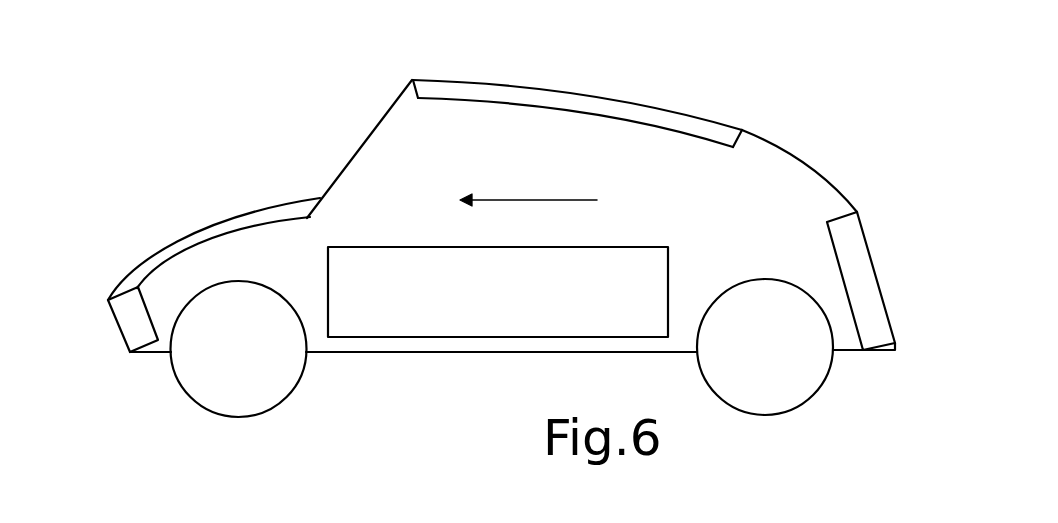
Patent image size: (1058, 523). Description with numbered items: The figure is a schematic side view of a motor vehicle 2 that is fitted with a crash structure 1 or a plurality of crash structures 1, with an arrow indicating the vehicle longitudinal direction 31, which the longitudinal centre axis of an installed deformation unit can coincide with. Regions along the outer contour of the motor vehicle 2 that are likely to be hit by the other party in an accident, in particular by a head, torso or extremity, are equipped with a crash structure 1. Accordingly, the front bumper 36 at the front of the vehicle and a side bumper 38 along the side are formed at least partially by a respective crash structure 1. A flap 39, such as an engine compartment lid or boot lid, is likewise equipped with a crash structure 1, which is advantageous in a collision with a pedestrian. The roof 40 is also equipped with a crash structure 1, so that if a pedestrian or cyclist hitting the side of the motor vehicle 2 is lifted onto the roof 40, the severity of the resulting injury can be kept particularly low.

The crash structure 1 is at (499, 199).
The motor vehicle 2 is at (307, 80).
The vehicle longitudinal direction 31 is at (550, 200).
The front bumper 36 is at (120, 332).
The side bumper 38 is at (642, 245).
The flap 39 is at (172, 235).
The roof 40 is at (660, 100).